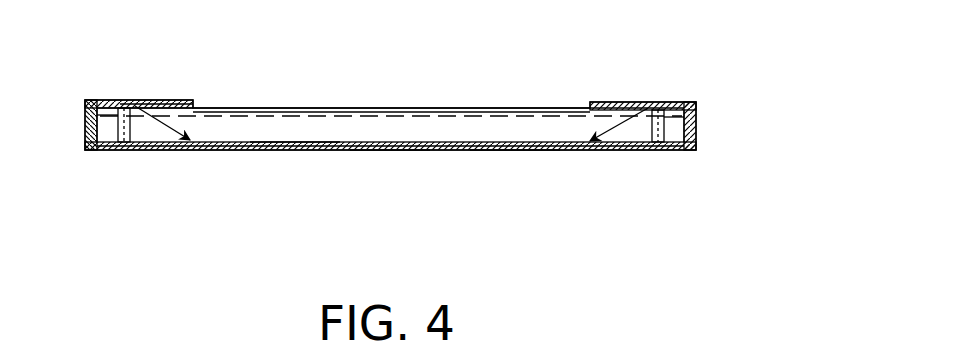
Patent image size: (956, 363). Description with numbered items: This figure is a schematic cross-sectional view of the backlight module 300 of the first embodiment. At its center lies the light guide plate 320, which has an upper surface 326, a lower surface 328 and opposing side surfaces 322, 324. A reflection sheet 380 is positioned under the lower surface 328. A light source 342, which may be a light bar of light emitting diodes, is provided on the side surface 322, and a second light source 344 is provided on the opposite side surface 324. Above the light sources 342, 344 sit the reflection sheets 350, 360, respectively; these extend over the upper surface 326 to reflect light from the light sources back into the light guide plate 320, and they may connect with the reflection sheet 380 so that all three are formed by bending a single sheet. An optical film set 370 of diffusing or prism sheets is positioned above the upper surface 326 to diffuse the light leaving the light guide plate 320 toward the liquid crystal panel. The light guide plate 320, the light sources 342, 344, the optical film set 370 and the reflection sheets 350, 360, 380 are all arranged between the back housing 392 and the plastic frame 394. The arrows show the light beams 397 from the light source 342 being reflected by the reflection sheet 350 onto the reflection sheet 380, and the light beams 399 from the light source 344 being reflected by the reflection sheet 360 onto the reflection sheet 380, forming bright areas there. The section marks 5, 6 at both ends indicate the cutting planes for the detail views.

The backlight module 300 is at (110, 60).
The light guide plate 320 is at (447, 130).
The side surface 322 is at (122, 152).
The side surface 324 is at (660, 152).
The upper surface 326 is at (440, 109).
The lower surface 328 is at (388, 145).
The light source 342 is at (86, 117).
The light source 344 is at (667, 102).
The reflection sheet 350 is at (122, 99).
The reflection sheet 360 is at (650, 108).
The optical film set 370 is at (517, 94).
The reflection sheet 380 is at (510, 152).
The back housing 392 is at (312, 150).
The plastic frame 394 is at (165, 100).
The light beams 397 is at (207, 107).
The light beams 399 is at (606, 115).
The section line 5 is at (105, 151).
The section line 6 is at (112, 151).